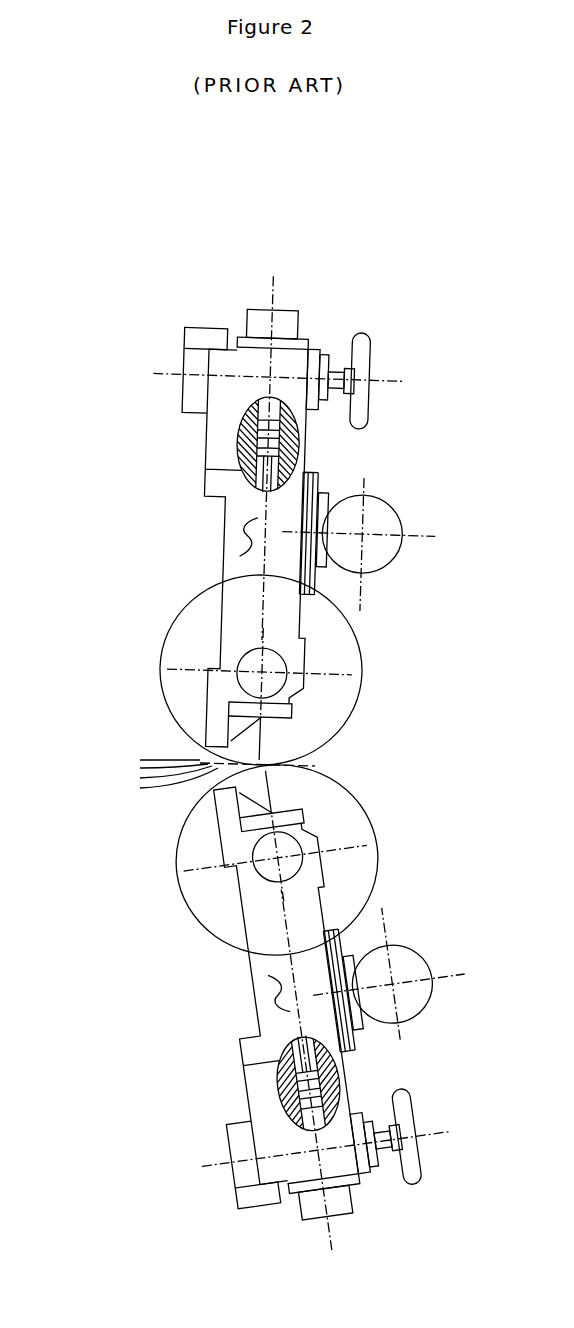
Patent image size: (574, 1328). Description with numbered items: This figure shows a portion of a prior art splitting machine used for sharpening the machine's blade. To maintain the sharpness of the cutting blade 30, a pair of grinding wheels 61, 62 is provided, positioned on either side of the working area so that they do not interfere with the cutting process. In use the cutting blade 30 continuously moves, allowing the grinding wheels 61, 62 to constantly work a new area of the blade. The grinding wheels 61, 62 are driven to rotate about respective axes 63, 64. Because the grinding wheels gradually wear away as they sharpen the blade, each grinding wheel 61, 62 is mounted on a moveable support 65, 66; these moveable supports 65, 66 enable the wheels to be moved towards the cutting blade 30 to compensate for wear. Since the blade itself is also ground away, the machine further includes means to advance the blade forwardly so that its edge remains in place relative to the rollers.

The cutting blade 30 is at (193, 760).
The grinding wheel 61 is at (332, 652).
The grinding wheel 62 is at (342, 828).
The axis 63 is at (252, 675).
The axis 64 is at (272, 860).
The moveable support 65 is at (247, 533).
The moveable support 66 is at (257, 995).